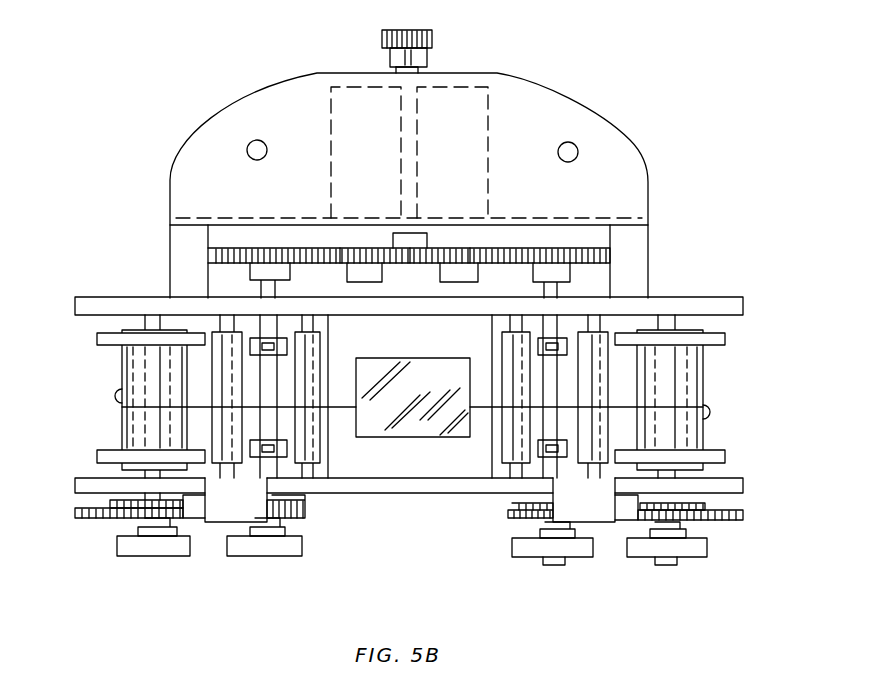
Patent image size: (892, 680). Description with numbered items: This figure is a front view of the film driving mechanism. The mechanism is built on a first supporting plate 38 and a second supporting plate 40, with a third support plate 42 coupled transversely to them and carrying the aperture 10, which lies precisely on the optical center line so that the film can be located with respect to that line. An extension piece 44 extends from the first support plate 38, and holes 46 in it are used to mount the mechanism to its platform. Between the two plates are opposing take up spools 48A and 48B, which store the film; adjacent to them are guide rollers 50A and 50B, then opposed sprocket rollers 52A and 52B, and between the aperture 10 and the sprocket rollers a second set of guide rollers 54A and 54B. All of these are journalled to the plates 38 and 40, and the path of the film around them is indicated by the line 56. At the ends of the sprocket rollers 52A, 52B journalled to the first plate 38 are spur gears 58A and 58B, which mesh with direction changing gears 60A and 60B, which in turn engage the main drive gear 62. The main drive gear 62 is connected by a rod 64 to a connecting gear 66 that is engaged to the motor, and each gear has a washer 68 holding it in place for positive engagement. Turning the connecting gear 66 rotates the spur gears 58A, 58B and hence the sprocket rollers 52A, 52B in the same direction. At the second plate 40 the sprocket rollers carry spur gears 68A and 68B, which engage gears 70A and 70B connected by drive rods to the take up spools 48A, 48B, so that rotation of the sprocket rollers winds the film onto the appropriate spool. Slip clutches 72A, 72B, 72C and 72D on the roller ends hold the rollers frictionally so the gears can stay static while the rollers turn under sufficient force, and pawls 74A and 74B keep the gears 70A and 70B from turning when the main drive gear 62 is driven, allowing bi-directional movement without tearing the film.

The aperture 10 is at (440, 438).
The first supporting plate 38 is at (75, 316).
The second supporting plate 40 is at (80, 478).
The third support plate 42 is at (395, 480).
The extension piece 44 is at (572, 102).
The holes 46 is at (255, 159).
The take up spool 48A is at (133, 375).
The take up spool 48B is at (683, 440).
The guide roller 50A is at (220, 338).
The guide roller 50B is at (608, 390).
The sprocket roller 52A is at (253, 340).
The sprocket roller 52B is at (556, 378).
The guide roller 54A is at (323, 347).
The guide roller 54B is at (503, 347).
The line 56 is at (115, 405).
The spur gear 58A is at (286, 248).
The spur gear 58B is at (561, 248).
The direction changing gear 60A is at (362, 248).
The direction changing gear 60B is at (453, 248).
The main drive gear 62 is at (423, 233).
The rod 64 is at (400, 130).
The connecting gear 66 is at (417, 28).
The washer 68 is at (432, 52).
The spur gear 68A is at (305, 512).
The spur gear 68B is at (508, 512).
The gear 70A is at (75, 512).
The gear 70B is at (722, 523).
The slip clutch 72A is at (120, 548).
The slip clutch 72B is at (228, 545).
The slip clutch 72C is at (520, 558).
The slip clutch 72D is at (700, 558).
The pawl 74A is at (192, 512).
The pawl 74B is at (622, 512).